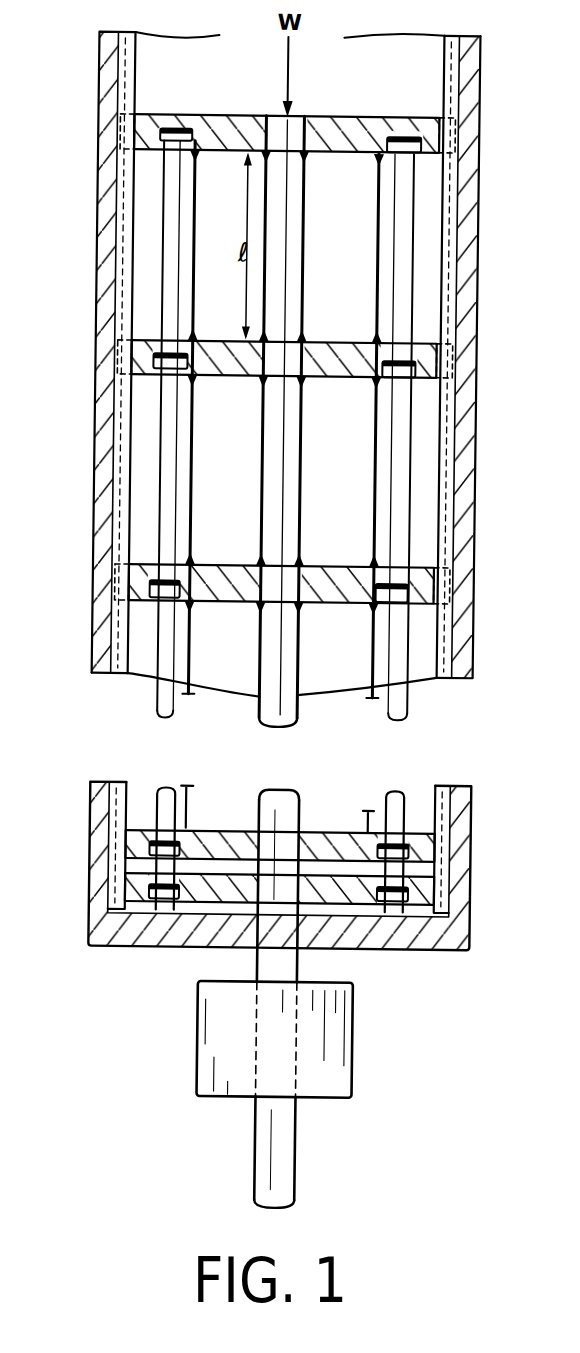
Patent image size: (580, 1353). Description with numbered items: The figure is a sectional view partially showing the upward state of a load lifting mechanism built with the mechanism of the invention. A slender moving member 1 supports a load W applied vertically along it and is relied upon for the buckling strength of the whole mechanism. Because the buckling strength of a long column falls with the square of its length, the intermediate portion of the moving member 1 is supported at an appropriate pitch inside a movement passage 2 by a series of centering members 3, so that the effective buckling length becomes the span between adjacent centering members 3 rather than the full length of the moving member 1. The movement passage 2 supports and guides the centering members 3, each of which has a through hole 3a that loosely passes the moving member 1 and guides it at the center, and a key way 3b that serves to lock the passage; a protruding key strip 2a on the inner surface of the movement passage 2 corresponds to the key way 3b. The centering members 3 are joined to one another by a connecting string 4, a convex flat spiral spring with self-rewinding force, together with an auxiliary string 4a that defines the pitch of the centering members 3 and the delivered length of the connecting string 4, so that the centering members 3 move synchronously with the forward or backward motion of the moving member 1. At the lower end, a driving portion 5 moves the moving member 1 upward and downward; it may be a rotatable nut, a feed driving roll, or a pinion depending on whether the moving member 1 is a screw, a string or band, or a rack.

The moving member 1 is at (288, 262).
The movement passage 2 is at (464, 469).
The protruding key strip 2a is at (121, 245).
The centering member 3 is at (344, 130).
The through hole 3a is at (262, 379).
The key way 3b is at (452, 125).
The connecting string 4 is at (166, 303).
The auxiliary string 4a is at (184, 195).
The driving portion 5 is at (366, 1079).